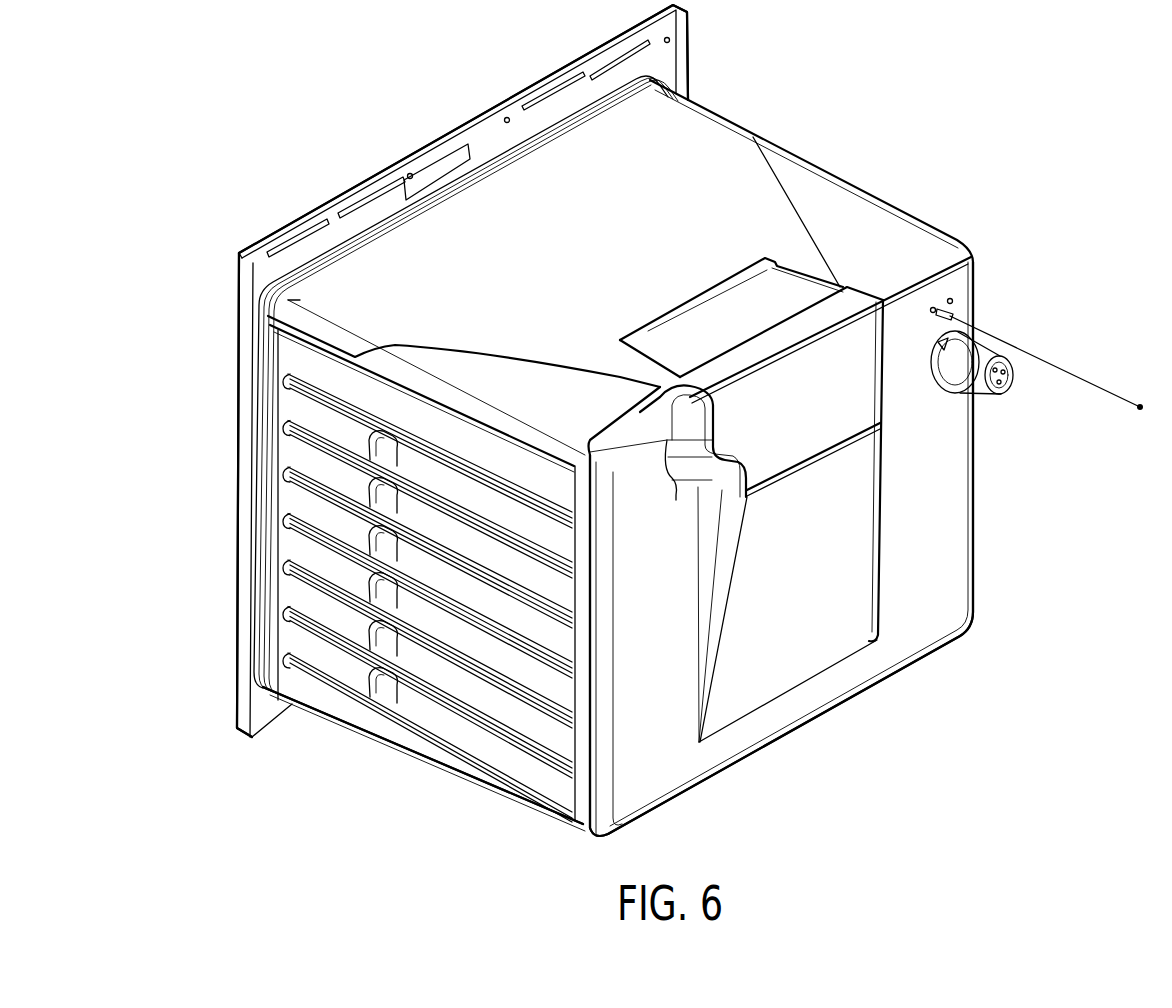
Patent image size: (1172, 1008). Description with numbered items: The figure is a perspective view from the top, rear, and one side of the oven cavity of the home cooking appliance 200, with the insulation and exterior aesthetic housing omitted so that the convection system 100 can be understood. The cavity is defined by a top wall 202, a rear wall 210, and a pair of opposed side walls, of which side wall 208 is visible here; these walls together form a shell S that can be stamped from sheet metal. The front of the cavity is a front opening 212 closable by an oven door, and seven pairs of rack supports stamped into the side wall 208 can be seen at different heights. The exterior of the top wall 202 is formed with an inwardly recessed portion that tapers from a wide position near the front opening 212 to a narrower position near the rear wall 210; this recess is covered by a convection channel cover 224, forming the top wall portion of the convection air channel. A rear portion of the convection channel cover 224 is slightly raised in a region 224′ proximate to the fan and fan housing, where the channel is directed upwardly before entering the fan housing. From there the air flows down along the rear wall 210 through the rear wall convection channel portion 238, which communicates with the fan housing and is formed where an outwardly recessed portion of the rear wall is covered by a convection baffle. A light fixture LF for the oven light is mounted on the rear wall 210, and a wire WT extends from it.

The home cooking appliance 200 is at (163, 487).
The front opening 212 is at (237, 358).
The convection channel cover 224 is at (387, 257).
The raised region of the convection channel cover 224′ is at (687, 332).
The top wall 202 is at (848, 210).
The convection system 100 is at (506, 215).
The rear wall 210 is at (948, 572).
The rear wall convection channel portion 238 is at (800, 648).
The side wall 208 is at (425, 703).
The shell S is at (497, 790).
The light fixture LF is at (983, 397).
The wire WT is at (1068, 370).